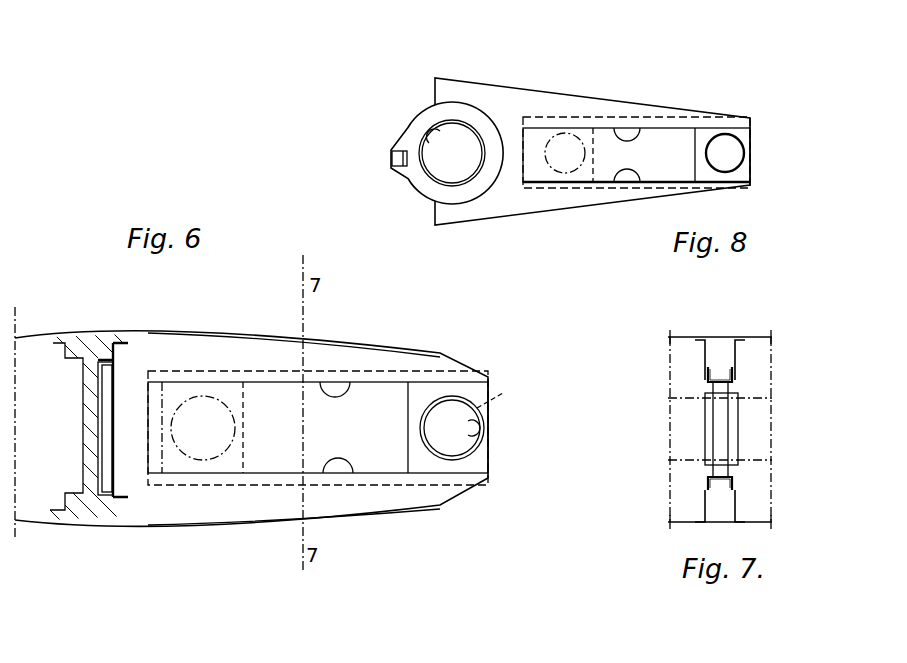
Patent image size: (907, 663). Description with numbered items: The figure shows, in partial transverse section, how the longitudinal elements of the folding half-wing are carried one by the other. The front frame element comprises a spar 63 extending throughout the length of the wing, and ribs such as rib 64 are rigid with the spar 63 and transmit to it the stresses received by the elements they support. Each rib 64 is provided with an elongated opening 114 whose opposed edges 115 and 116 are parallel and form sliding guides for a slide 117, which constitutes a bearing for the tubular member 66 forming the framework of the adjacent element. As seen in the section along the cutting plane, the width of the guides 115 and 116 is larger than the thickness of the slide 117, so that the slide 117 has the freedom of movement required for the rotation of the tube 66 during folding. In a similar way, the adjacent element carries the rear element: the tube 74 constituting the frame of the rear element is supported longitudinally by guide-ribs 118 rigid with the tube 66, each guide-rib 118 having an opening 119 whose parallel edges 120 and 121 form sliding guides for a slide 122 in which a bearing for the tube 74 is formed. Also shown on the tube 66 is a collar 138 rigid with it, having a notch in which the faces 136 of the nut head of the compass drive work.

In FIG. 6, the spar 63 is at (102, 440).
In FIG. 6, the rib 64 is at (115, 358).
In FIG. 7, the rib 64 is at (735, 357).
In FIG. 6, the tubular member 66 is at (480, 435).
In FIG. 8, the tubular member 66 is at (425, 145).
In FIG. 7, the tubular member 66 is at (757, 449).
In FIG. 8, the tube 74 is at (728, 170).
In FIG. 6, the elongated opening 114 is at (278, 403).
In FIG. 6, the edge 115 is at (350, 388).
In FIG. 7, the edge 115 is at (718, 368).
In FIG. 6, the edge 116 is at (357, 470).
In FIG. 7, the edge 116 is at (715, 485).
In FIG. 6, the slide 117 is at (470, 390).
In FIG. 7, the slide 117 is at (725, 421).
In FIG. 8, the guide-rib 118 is at (513, 110).
In FIG. 8, the opening 119 is at (620, 155).
In FIG. 8, the edge 120 is at (643, 128).
In FIG. 8, the edge 121 is at (610, 182).
In FIG. 8, the slide 122 is at (803, 140).
In FIG. 8, the faces 136 is at (393, 168).
In FIG. 8, the collar 138 is at (420, 122).